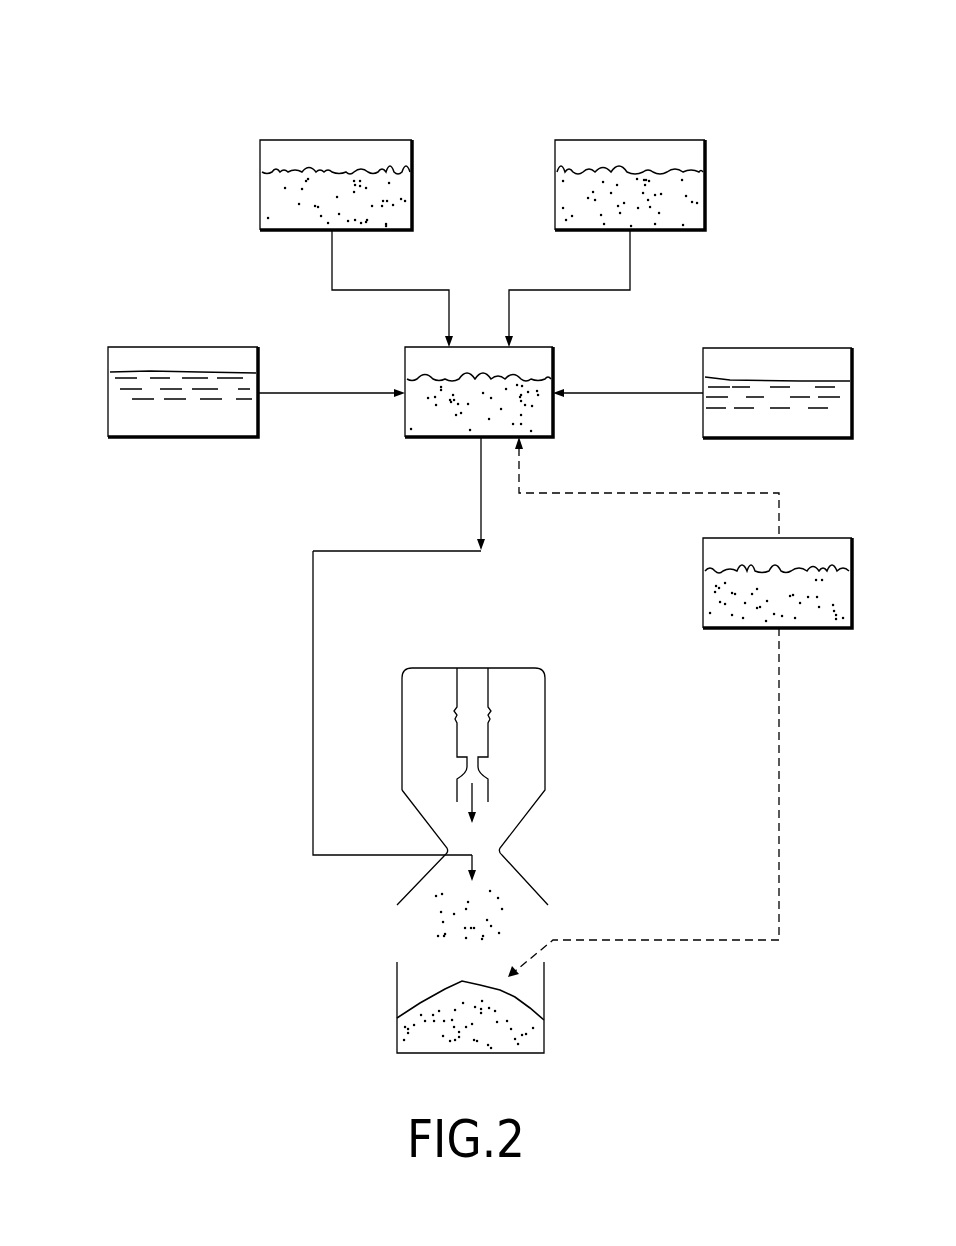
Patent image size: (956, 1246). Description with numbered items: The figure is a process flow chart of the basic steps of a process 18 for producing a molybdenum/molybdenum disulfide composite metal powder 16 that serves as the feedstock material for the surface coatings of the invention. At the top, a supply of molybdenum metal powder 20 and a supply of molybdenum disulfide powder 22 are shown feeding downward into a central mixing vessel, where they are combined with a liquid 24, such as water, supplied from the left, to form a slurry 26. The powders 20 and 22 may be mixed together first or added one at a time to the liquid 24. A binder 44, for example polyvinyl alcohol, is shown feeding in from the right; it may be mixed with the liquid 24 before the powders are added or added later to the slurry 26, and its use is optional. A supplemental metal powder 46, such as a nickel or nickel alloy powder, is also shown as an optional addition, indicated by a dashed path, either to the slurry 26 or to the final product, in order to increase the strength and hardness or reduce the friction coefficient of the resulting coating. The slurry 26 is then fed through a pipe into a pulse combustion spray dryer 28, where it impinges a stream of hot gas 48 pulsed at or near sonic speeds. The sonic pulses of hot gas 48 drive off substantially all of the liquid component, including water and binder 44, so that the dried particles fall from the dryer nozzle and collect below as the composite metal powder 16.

The process 18 is at (88, 72).
The molybdenum metal powder 20 is at (329, 140).
The molybdenum disulfide powder 22 is at (641, 140).
The liquid 24 is at (180, 347).
The slurry 26 is at (436, 440).
The spray dryer 28 is at (555, 687).
The binder 44 is at (765, 348).
The supplemental metal powder 46 is at (820, 538).
The stream of hot gas 48 is at (472, 793).
The composite metal powder 16 is at (544, 1023).